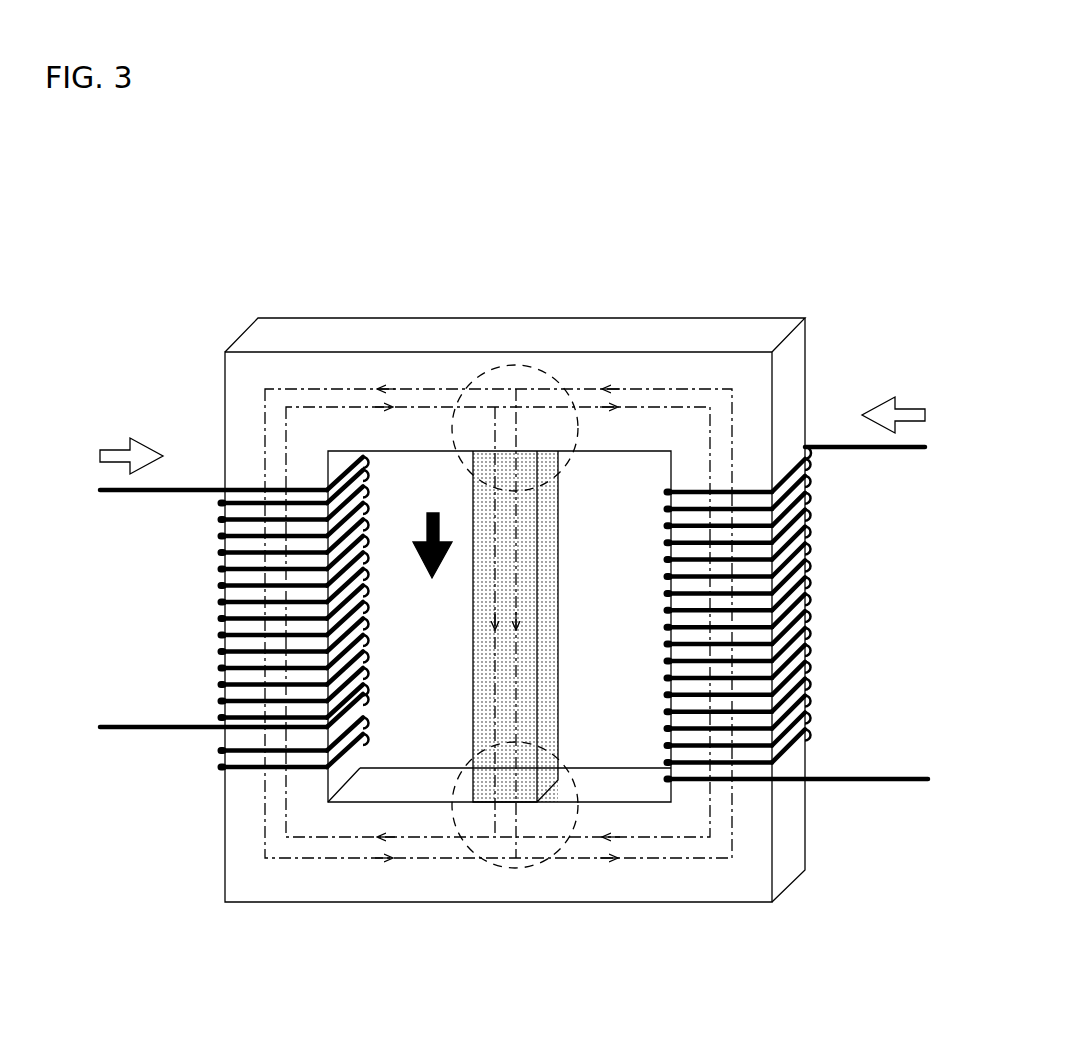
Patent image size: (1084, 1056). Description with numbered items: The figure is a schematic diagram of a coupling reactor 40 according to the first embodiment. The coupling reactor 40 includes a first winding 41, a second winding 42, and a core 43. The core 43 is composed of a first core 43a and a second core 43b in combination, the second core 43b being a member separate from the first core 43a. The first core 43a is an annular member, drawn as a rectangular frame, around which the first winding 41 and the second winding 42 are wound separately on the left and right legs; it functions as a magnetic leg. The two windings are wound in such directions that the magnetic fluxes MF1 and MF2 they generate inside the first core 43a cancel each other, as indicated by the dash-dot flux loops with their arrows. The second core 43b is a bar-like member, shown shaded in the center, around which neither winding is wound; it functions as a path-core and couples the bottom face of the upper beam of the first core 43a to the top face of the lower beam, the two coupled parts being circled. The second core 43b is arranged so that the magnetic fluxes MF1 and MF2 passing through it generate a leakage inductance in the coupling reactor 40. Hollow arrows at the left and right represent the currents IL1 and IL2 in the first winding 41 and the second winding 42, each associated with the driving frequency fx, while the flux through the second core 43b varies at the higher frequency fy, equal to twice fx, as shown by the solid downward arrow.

The coupling reactor 40 is at (226, 270).
The first winding 41 is at (201, 498).
The second winding 42 is at (822, 498).
The core 43 is at (790, 948).
The first core 43a is at (514, 333).
The second core 43b is at (558, 622).
The magnetic flux MF1 is at (337, 838).
The magnetic flux MF2 is at (428, 858).
The first coil current IL1 is at (113, 438).
The second coil current IL2 is at (912, 397).